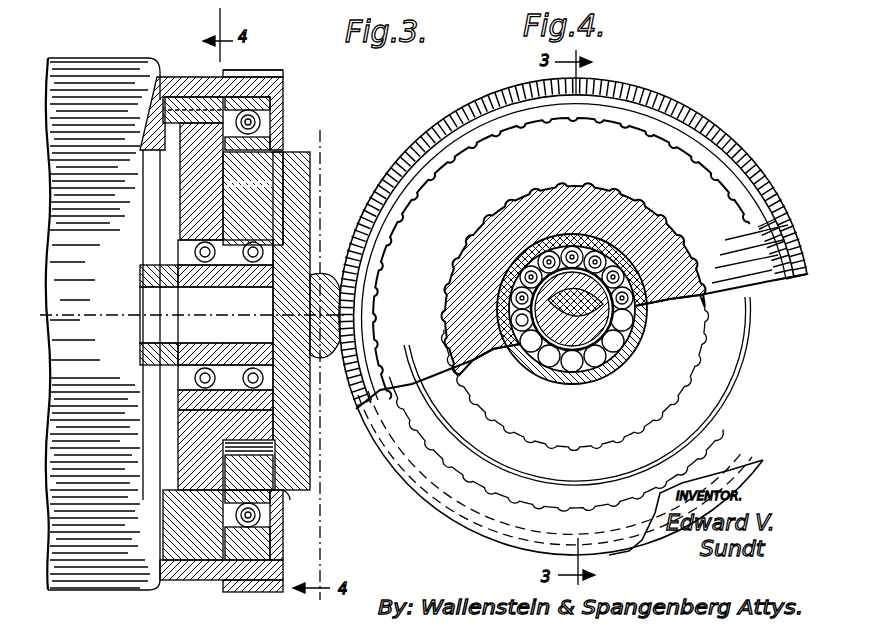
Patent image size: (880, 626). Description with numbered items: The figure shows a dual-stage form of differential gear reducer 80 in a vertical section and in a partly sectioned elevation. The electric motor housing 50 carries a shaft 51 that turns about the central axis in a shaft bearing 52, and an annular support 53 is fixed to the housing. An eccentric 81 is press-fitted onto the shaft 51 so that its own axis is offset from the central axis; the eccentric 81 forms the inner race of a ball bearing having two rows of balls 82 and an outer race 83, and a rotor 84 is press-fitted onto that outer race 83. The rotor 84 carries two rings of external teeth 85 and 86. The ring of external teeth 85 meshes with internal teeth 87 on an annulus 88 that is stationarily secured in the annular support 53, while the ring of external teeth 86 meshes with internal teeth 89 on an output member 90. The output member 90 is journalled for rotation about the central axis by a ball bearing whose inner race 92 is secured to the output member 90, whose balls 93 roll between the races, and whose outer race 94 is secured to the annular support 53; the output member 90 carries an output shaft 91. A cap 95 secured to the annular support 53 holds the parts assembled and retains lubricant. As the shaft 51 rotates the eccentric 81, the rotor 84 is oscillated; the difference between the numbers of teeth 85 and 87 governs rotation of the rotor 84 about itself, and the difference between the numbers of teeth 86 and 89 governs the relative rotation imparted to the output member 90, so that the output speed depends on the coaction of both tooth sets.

In FIG. 3, the housing 50 is at (112, 576).
In FIG. 3, the shaft 51 is at (170, 326).
In FIG. 4, the shaft 51 is at (625, 325).
In FIG. 3, the shaft bearing 52 is at (165, 376).
In FIG. 3, the annular support 53 is at (250, 582).
In FIG. 4, the annular support 53 is at (479, 96).
In FIG. 3, the differential gear reducer 80 is at (342, 120).
In FIG. 3, the eccentric 81 is at (182, 292).
In FIG. 4, the eccentric 81 is at (507, 302).
In FIG. 3, the balls 82 is at (158, 278).
In FIG. 4, the balls 82 is at (520, 233).
In FIG. 3, the outer race 83 is at (196, 252).
In FIG. 4, the outer race 83 is at (562, 225).
In FIG. 3, the rotor 84 is at (198, 182).
In FIG. 4, the rotor 84 is at (700, 206).
In FIG. 3, the external teeth 85 is at (200, 472).
In FIG. 4, the external teeth 85 is at (722, 180).
In FIG. 3, the external teeth 86 is at (226, 446).
In FIG. 4, the external teeth 86 is at (742, 215).
In FIG. 3, the internal teeth 87 is at (180, 520).
In FIG. 4, the internal teeth 87 is at (688, 153).
In FIG. 3, the annulus 88 is at (162, 546).
In FIG. 4, the annulus 88 is at (635, 117).
In FIG. 3, the internal teeth 89 is at (299, 503).
In FIG. 4, the internal teeth 89 is at (798, 228).
In FIG. 3, the output member 90 is at (302, 204).
In FIG. 4, the output member 90 is at (452, 438).
In FIG. 3, the output shaft 91 is at (334, 270).
In FIG. 4, the output shaft 91 is at (615, 352).
In FIG. 3, the inner race 92 is at (272, 140).
In FIG. 3, the balls 93 is at (260, 118).
In FIG. 3, the outer race 94 is at (286, 92).
In FIG. 3, the cap 95 is at (292, 78).
In FIG. 4, the cap 95 is at (468, 510).